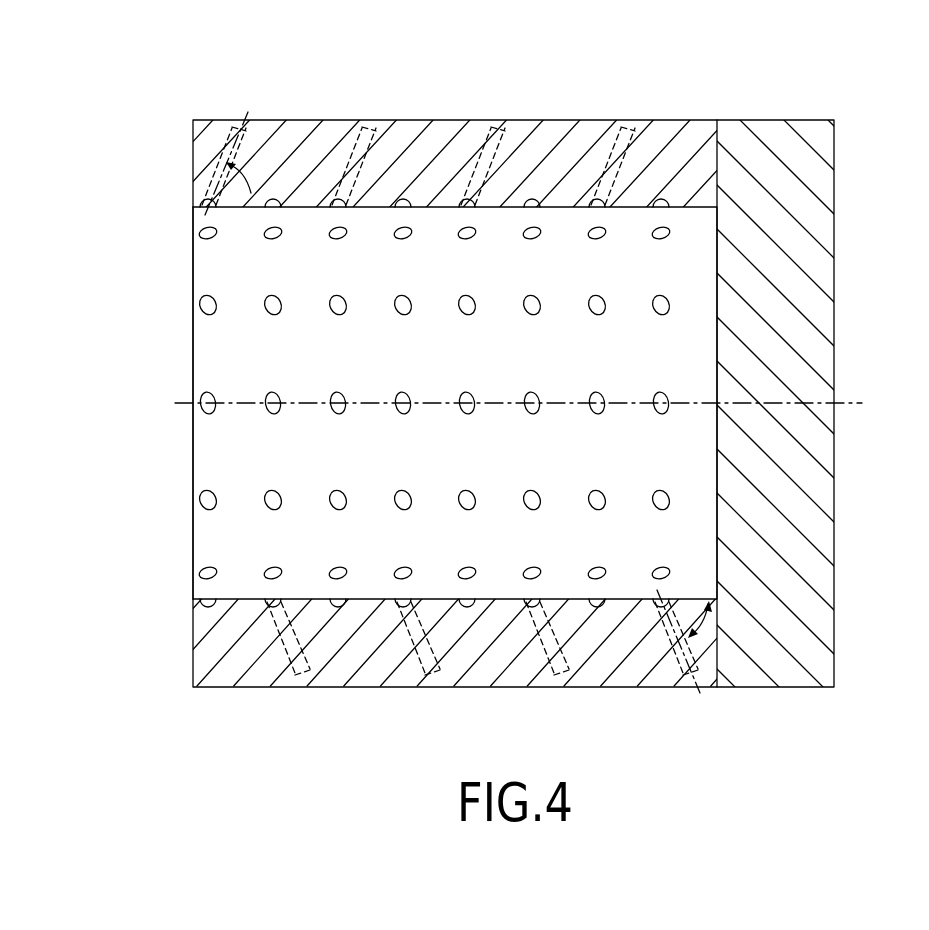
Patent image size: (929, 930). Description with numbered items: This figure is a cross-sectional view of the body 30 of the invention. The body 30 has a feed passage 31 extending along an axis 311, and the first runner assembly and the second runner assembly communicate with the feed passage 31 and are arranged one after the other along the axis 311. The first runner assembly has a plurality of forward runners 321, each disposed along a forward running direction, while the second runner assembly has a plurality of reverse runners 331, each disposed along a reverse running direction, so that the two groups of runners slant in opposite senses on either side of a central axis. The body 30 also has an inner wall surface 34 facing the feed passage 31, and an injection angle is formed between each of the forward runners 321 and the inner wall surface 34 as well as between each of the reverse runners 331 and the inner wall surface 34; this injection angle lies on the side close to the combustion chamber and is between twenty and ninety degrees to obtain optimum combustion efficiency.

The body 30 is at (479, 111).
The feed passage 31 is at (210, 360).
The axis 311 is at (855, 402).
The forward runners 321 is at (676, 205).
The reverse runners 331 is at (630, 125).
The inner wall surface 34 is at (443, 208).